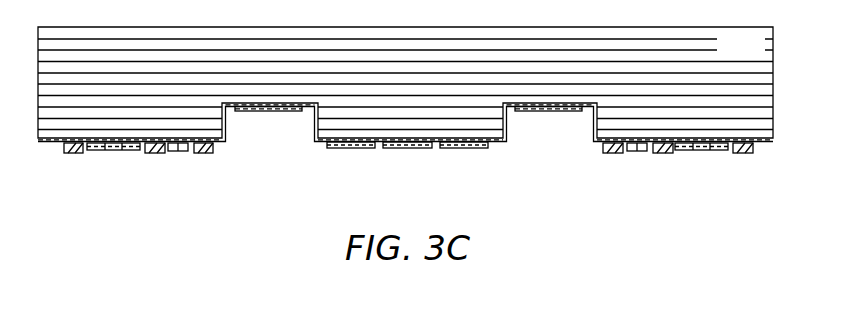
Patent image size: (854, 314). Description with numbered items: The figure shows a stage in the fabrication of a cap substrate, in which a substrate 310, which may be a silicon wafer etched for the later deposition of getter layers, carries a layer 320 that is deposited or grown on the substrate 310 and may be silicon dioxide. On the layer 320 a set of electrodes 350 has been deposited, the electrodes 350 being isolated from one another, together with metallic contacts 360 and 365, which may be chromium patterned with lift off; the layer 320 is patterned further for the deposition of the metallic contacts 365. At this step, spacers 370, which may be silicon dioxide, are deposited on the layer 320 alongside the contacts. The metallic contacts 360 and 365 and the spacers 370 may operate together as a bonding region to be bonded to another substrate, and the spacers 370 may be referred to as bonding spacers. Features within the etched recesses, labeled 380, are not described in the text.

The substrate 310 is at (758, 56).
The layer 320 is at (493, 143).
The set of electrodes 350 is at (353, 148).
The metallic contacts 360 is at (117, 153).
The metallic contacts 365 is at (188, 153).
The spacers 370 is at (75, 153).
The recess contact layer 380 is at (274, 115).